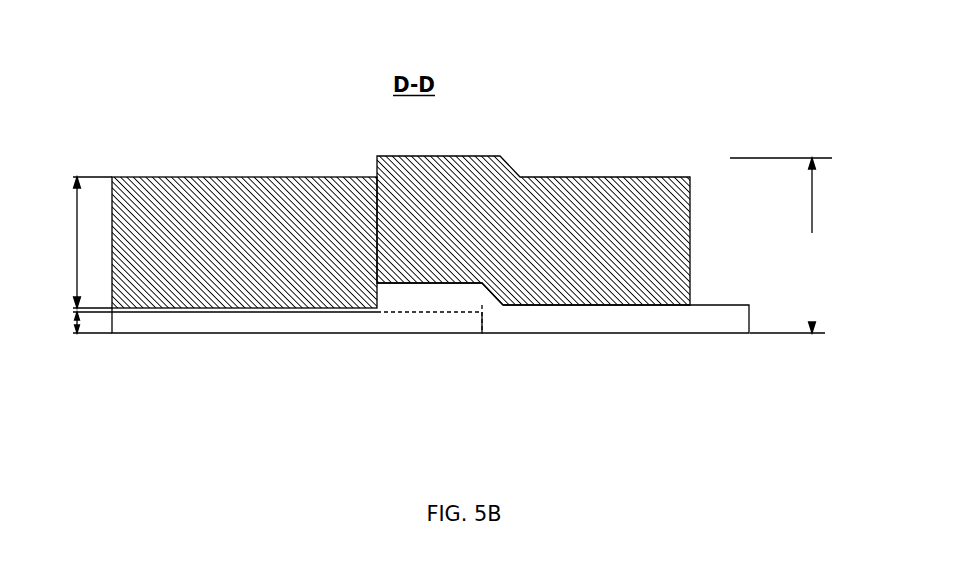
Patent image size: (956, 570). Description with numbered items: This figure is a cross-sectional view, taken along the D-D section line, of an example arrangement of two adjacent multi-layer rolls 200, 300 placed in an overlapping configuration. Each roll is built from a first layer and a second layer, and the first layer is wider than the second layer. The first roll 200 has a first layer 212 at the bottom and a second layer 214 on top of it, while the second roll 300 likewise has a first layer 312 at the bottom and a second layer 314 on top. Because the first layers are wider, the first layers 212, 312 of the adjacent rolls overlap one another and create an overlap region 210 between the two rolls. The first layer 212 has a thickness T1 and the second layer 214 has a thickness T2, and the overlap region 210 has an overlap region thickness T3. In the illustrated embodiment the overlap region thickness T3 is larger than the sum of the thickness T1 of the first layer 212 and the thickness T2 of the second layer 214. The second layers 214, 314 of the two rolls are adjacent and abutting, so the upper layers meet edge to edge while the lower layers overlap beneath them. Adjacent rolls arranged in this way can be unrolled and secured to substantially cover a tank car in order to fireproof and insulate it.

The roll 200 is at (281, 273).
The overlap region 210 is at (447, 345).
The first layer 212 is at (162, 328).
The second layer 214 is at (124, 188).
The roll 300 is at (563, 228).
The first layer 312 is at (630, 331).
The second layer 314 is at (462, 155).
The thickness of first layer T1 is at (73, 322).
The thickness of second layer T2 is at (73, 240).
The overlap region thickness T3 is at (786, 245).